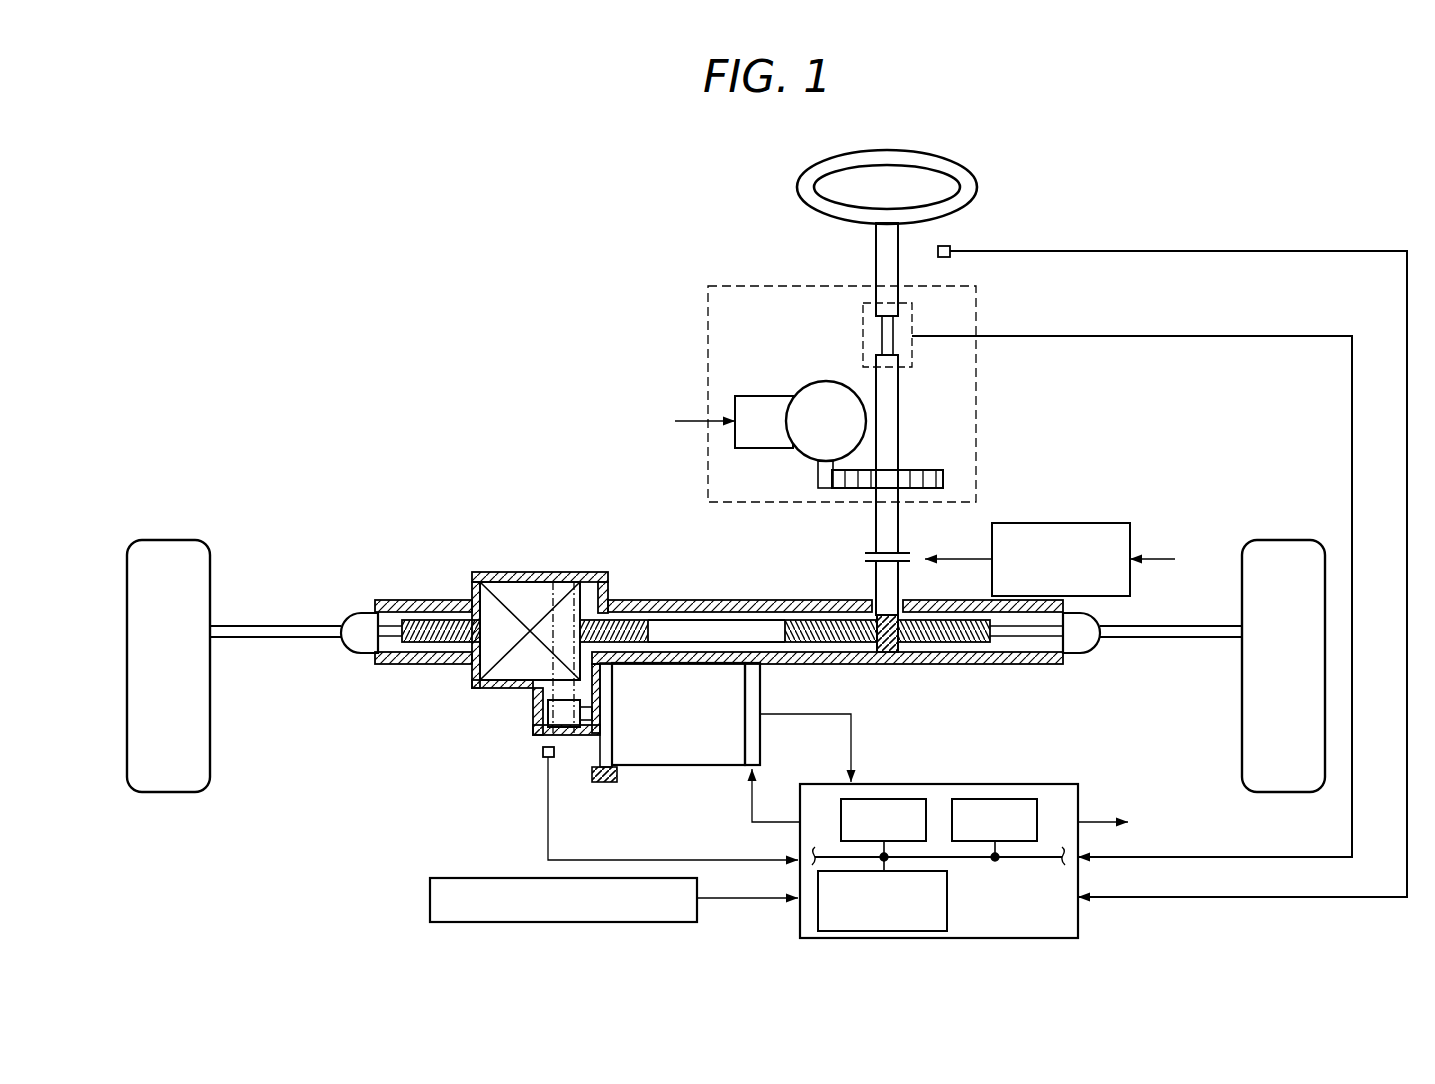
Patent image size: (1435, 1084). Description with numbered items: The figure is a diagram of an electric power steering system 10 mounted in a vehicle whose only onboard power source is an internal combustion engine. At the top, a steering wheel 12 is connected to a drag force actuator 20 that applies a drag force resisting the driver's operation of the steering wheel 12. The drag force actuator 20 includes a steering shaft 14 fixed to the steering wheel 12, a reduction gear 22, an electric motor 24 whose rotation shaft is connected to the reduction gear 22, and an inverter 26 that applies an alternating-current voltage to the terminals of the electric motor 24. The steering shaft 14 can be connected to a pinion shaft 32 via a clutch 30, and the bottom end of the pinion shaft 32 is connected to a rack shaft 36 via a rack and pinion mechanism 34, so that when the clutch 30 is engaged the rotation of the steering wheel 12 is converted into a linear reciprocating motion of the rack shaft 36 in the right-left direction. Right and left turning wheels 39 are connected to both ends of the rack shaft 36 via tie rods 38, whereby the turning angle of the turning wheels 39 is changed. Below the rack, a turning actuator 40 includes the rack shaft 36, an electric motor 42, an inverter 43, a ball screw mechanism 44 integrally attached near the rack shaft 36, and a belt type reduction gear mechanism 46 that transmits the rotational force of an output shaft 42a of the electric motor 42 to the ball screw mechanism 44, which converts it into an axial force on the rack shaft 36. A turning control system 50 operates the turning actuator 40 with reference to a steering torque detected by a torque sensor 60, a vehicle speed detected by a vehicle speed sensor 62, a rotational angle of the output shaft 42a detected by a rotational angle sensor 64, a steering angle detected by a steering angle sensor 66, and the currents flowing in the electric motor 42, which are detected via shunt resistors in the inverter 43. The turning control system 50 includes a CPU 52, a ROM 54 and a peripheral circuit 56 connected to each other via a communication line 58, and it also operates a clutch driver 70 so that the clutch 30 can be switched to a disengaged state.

The electric power steering system 10 is at (1249, 217).
The steering wheel 12 is at (977, 180).
The steering shaft 14 is at (899, 270).
The drag force actuator 20 is at (760, 285).
The reduction gear 22 is at (933, 469).
The electric motor 24 is at (828, 382).
The inverter 26 is at (773, 394).
The clutch 30 is at (906, 548).
The pinion shaft 32 is at (883, 592).
The rack and pinion mechanism 34 is at (911, 677).
The rack shaft 36 is at (1022, 640).
The tie rods 38 is at (282, 637).
The turning wheels 39 is at (168, 540).
The turning actuator 40 is at (477, 523).
The electric motor 42 is at (648, 767).
The output shaft 42a is at (585, 740).
The inverter 43 is at (757, 750).
The ball screw mechanism 44 is at (488, 640).
The belt type reduction gear mechanism 46 is at (525, 712).
The turning control system 50 is at (1056, 786).
The CPU 52 is at (884, 797).
The ROM 54 is at (995, 797).
The peripheral circuit 56 is at (950, 898).
The communication line 58 is at (1035, 862).
The torque sensor 60 is at (915, 325).
The vehicle speed sensor 62 is at (429, 900).
The rotational angle sensor 64 is at (539, 757).
The steering angle sensor 66 is at (946, 245).
The clutch driver 70 is at (1100, 523).